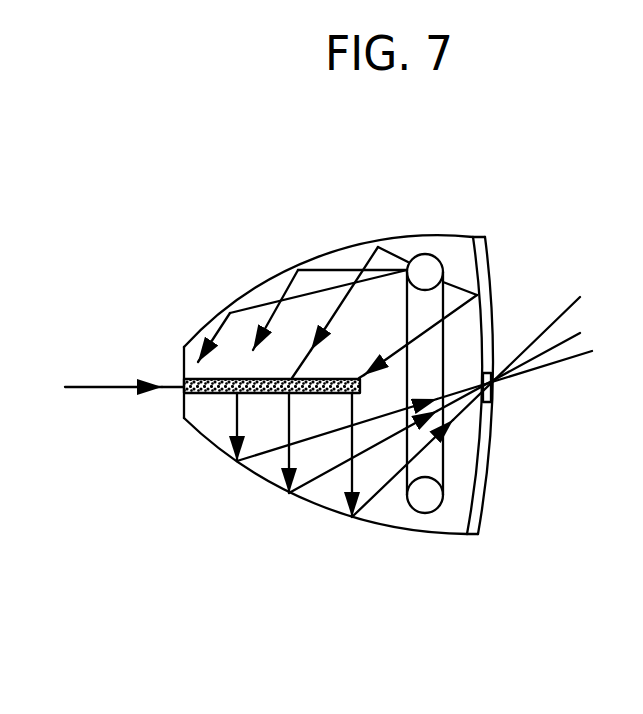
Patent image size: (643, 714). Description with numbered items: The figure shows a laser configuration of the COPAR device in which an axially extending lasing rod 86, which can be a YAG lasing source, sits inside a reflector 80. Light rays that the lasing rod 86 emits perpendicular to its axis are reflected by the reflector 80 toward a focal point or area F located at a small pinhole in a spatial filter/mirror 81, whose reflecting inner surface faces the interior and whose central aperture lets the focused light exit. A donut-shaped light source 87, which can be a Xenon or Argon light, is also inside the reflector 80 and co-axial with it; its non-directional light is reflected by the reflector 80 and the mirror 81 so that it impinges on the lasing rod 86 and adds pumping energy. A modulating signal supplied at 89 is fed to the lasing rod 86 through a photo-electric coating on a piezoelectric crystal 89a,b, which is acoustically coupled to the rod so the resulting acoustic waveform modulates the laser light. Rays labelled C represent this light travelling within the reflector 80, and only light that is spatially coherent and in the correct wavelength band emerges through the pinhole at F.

The reflector 80 is at (323, 510).
The mirror 81 is at (489, 286).
The lasing rod 86 is at (267, 393).
The donut-shaped light source 87 is at (413, 513).
The modulating signal 89 is at (145, 378).
The photo-electric coating and piezoelectric crystal 89a,b is at (183, 392).
The collimated light rays C is at (292, 297).
The focal point F is at (493, 383).